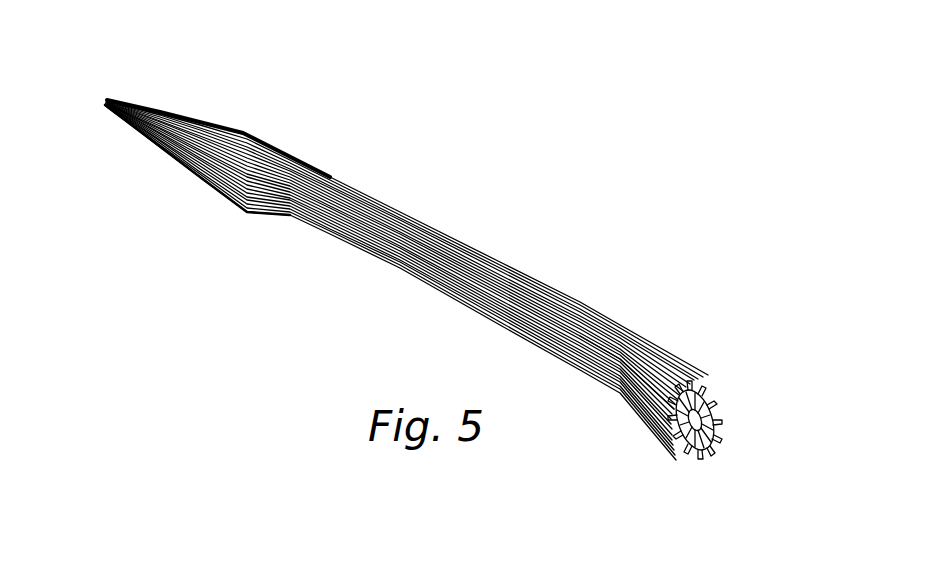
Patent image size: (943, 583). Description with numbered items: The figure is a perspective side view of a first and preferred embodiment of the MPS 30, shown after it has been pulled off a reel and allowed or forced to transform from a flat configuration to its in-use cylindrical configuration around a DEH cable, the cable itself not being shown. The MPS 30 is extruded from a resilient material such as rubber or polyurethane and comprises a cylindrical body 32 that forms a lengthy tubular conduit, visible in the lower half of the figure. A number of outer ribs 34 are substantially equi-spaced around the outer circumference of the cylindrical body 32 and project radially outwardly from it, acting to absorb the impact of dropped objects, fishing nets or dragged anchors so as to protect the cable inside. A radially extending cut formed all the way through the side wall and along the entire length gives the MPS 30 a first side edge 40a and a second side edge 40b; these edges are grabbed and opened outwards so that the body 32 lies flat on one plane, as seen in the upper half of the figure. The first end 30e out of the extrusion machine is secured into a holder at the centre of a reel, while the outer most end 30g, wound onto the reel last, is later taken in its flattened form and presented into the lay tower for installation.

The MPS 30 is at (718, 478).
The first end 30e is at (130, 97).
The outer most end 30g is at (723, 406).
The cylindrical body 32 is at (642, 392).
The first side edge 40a is at (188, 167).
The second side edge 40b is at (243, 134).
The outer ribs 34 is at (424, 576).